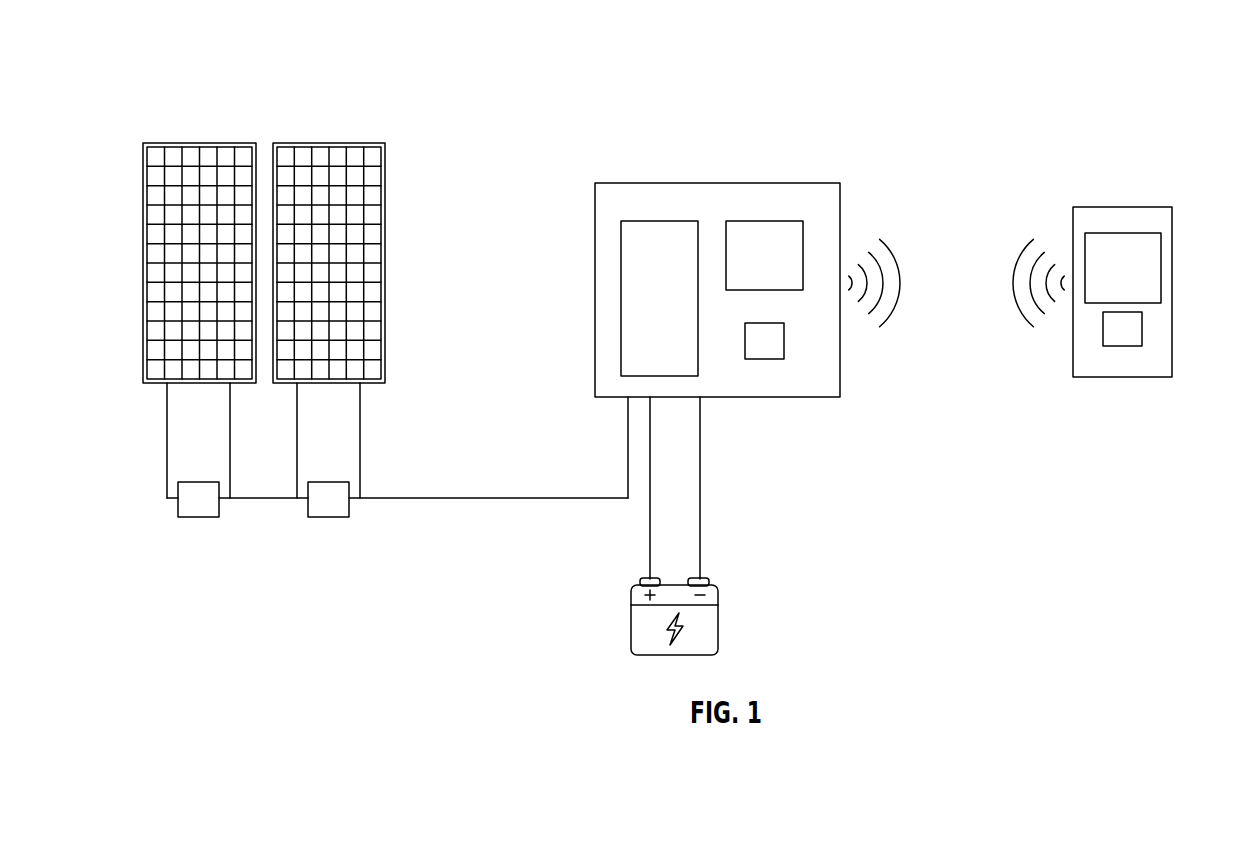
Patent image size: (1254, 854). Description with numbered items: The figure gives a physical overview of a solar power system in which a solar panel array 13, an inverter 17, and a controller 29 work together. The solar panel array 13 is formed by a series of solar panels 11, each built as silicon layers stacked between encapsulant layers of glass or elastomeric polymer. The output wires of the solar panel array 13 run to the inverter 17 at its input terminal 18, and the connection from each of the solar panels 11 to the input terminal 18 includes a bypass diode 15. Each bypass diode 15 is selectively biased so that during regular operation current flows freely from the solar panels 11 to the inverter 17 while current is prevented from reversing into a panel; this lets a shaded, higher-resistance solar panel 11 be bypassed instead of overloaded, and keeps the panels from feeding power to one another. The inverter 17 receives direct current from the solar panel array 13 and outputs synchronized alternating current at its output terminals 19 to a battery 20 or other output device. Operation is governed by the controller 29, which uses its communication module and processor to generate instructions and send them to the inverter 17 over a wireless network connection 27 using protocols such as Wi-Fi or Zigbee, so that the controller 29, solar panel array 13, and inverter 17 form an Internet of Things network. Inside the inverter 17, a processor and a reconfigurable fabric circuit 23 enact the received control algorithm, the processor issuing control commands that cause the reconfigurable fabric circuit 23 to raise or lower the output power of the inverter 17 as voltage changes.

The solar panels 11 is at (288, 143).
The solar panel array 13 is at (128, 111).
The bypass diode 15 is at (329, 517).
The inverter 17 is at (612, 183).
The input terminal 18 is at (528, 498).
The output terminals 19 is at (650, 545).
The battery 20 is at (631, 628).
The reconfigurable fabric circuit 23 is at (667, 220).
The network connection 27 is at (1068, 400).
The controller 29 is at (1180, 283).